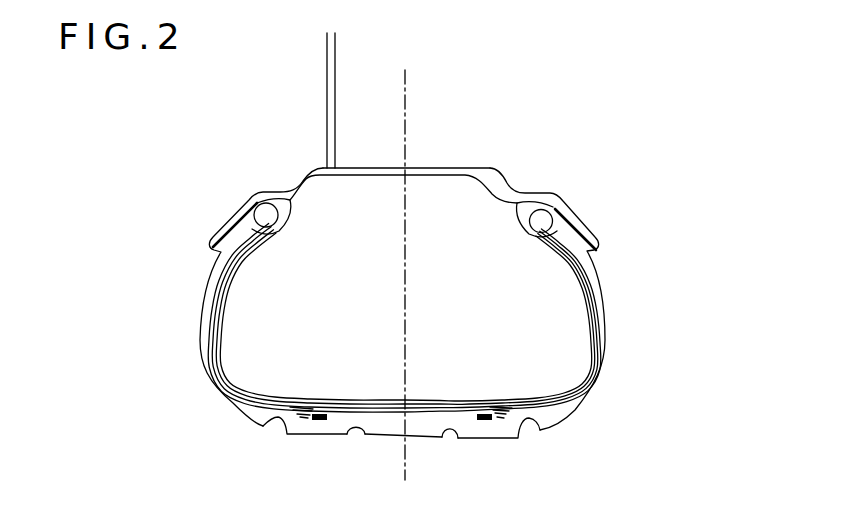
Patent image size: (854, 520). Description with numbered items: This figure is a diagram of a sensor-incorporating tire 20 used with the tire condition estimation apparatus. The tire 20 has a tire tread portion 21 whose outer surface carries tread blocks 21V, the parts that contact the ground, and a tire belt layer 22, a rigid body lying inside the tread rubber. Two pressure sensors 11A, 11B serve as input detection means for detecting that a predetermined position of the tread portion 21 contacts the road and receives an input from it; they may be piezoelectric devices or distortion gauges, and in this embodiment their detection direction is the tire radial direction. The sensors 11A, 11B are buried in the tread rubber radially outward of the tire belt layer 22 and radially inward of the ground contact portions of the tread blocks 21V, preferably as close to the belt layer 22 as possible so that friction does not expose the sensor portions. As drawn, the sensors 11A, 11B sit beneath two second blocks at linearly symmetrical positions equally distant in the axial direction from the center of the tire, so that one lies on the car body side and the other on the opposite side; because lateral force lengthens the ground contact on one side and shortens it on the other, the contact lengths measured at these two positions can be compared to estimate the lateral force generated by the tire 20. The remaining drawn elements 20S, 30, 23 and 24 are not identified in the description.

The sensor-incorporating tire 20 is at (586, 188).
The tread portion 20S is at (320, 222).
The tread surface 30 is at (427, 168).
The tire tread portion 21 is at (254, 423).
The tread blocks 21V is at (327, 437).
The tire belt layer 22 is at (383, 414).
The bead core 23 is at (524, 224).
The carcass ply 24 is at (577, 273).
The pressure sensor 11A is at (318, 413).
The pressure sensor 11B is at (487, 412).